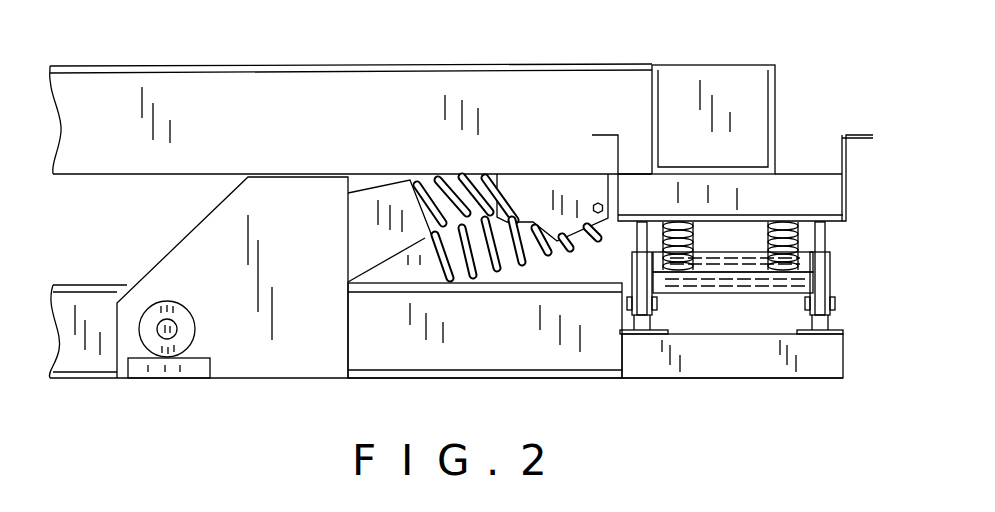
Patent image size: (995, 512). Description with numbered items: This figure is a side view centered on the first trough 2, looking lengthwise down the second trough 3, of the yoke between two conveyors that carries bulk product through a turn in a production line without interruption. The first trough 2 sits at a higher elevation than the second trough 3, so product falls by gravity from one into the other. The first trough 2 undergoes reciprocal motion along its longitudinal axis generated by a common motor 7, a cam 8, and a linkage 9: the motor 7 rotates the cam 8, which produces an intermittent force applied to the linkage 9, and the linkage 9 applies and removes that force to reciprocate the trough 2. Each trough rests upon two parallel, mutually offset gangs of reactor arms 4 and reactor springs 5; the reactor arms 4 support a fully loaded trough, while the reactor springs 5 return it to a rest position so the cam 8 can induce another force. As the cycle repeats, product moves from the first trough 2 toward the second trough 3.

The first trough 2 is at (437, 64).
The second trough 3 is at (849, 174).
The reactor arms 4 is at (815, 283).
The reactor springs 5 is at (798, 243).
The motor 7 is at (187, 323).
The cam 8 is at (173, 333).
The linkage 9 is at (495, 268).